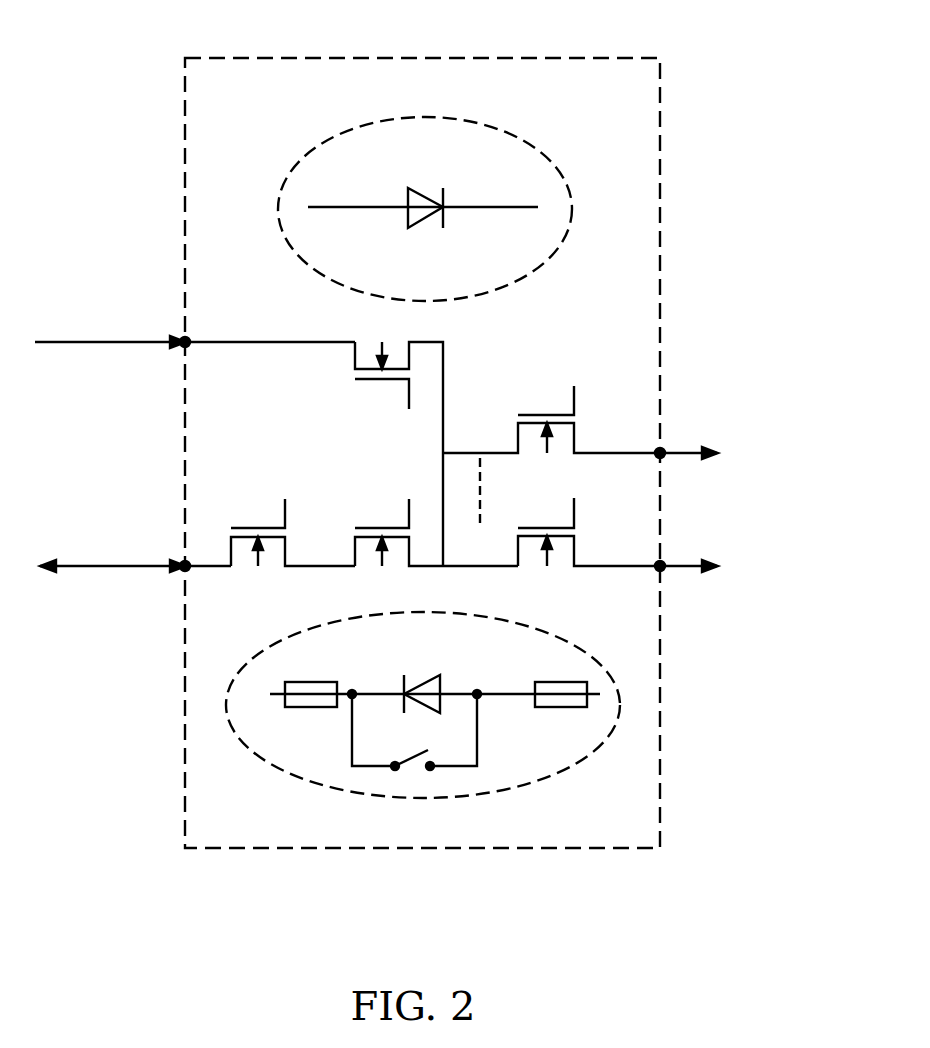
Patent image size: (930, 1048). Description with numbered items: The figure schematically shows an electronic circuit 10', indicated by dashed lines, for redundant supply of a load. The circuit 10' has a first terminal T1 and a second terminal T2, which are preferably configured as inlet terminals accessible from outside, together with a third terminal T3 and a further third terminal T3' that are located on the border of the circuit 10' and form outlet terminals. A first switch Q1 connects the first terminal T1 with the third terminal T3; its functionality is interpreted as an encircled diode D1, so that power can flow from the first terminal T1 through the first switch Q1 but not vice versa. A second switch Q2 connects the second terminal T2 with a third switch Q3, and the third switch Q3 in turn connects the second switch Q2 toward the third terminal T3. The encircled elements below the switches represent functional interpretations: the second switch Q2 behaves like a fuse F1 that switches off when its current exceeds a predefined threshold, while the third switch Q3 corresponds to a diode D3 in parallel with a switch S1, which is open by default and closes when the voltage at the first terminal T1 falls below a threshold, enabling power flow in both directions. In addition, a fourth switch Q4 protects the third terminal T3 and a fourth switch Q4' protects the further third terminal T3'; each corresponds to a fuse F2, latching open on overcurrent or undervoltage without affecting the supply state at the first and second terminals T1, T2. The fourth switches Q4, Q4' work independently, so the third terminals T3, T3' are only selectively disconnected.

The electronic circuit 10' is at (495, 453).
The diode D1 is at (423, 197).
The first terminal T1 is at (185, 342).
The second terminal T2 is at (185, 566).
The third terminal T3 is at (732, 417).
The further third terminal T3' is at (736, 531).
The first switch Q1 is at (399, 454).
The second switch Q2 is at (293, 532).
The third switch Q3 is at (436, 532).
The fourth switch Q4 is at (551, 418).
The fourth switch Q4' is at (589, 531).
The diode D3 is at (440, 682).
The fuse F1 is at (287, 703).
The fuse F2 is at (558, 703).
The switch S1 is at (408, 758).